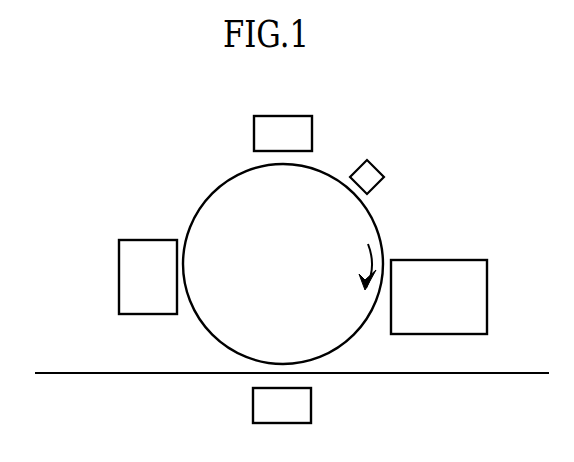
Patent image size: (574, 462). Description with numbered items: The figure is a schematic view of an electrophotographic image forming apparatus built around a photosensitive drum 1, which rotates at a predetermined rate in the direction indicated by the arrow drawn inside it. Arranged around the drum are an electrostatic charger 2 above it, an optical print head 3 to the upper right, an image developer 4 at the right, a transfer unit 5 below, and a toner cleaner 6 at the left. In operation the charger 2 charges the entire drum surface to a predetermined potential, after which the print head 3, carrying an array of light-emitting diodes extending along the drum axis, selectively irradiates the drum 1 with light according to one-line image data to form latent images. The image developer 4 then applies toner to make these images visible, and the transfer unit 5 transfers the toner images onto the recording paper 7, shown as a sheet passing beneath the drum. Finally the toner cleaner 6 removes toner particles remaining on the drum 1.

The photosensitive drum 1 is at (200, 198).
The electrostatic charger 2 is at (310, 122).
The optical print head 3 is at (378, 170).
The image developer 4 is at (440, 258).
The transfer unit 5 is at (309, 400).
The toner cleaner 6 is at (117, 265).
The recording paper 7 is at (433, 372).